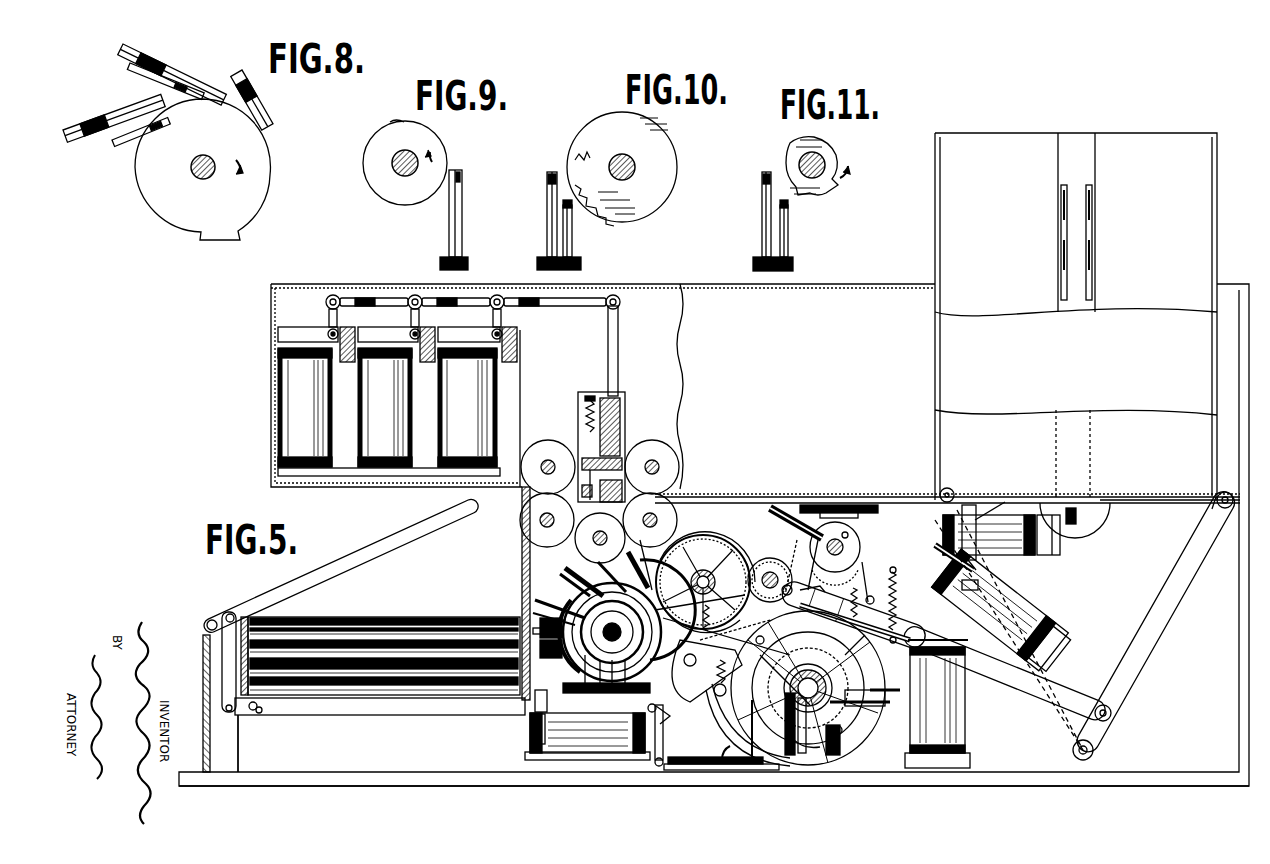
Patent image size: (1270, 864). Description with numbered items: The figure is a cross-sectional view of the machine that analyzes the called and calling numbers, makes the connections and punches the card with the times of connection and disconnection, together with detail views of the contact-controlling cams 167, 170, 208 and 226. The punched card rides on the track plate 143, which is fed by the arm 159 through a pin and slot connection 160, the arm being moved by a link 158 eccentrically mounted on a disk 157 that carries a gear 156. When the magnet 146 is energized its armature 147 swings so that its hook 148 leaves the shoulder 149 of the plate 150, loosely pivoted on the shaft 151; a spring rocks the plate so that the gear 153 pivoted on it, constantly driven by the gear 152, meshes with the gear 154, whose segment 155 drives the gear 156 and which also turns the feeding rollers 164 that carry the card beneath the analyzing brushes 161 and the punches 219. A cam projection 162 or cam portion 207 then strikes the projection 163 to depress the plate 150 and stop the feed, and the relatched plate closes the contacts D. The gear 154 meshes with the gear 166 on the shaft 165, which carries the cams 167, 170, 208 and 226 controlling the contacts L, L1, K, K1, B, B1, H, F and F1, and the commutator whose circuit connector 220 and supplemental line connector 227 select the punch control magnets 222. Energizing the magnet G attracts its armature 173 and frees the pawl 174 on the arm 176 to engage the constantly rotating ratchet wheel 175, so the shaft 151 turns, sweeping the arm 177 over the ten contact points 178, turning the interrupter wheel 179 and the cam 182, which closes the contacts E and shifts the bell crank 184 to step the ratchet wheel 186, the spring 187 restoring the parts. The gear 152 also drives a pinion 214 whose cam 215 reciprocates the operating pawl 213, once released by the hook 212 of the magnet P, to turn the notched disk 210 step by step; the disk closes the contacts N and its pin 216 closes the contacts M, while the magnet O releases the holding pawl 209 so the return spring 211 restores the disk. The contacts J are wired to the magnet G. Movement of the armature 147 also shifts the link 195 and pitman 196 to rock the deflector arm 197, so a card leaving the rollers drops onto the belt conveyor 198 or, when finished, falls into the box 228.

In FIG. 5, the track plate 143 is at (1171, 504).
In FIG. 5, the magnet 146 is at (608, 668).
In FIG. 5, the armature 147 is at (654, 748).
In FIG. 5, the hook 148 is at (608, 754).
In FIG. 5, the shoulder 149 is at (662, 768).
In FIG. 5, the plate 150 is at (685, 768).
In FIG. 5, the shaft 151 is at (838, 735).
In FIG. 5, the gear 152 is at (808, 688).
In FIG. 5, the gear 153 is at (722, 760).
In FIG. 5, the gear 154 is at (722, 546).
In FIG. 5, the segment 155 is at (746, 560).
In FIG. 5, the gear 156 is at (767, 566).
In FIG. 5, the disk 157 is at (797, 540).
In FIG. 5, the link 158 is at (1006, 680).
In FIG. 5, the arm 159 is at (1124, 674).
In FIG. 5, the pin and slot connection 160 is at (1212, 510).
In FIG. 5, the analyzing brush 161 is at (650, 458).
In FIG. 5, the cam projection 162 is at (718, 582).
In FIG. 5, the projection 163 is at (700, 628).
In FIG. 5, the feeding rollers 164 is at (668, 467).
In FIG. 8, the shaft 165 is at (196, 172).
In FIG. 9, the shaft 165 is at (398, 168).
In FIG. 10, the shaft 165 is at (630, 178).
In FIG. 11, the shaft 165 is at (826, 163).
In FIG. 5, the shaft 165 is at (602, 628).
In FIG. 5, the gear 166 is at (716, 596).
In FIG. 8, the cam 167 is at (172, 212).
In FIG. 5, the cam 167 is at (610, 665).
In FIG. 11, the cam 170 is at (832, 148).
In FIG. 5, the cam 170 is at (600, 656).
In FIG. 5, the armature 173 is at (1005, 632).
In FIG. 5, the pawl 174 is at (856, 630).
In FIG. 5, the ratchet wheel 175 is at (897, 634).
In FIG. 5, the arm 176 is at (815, 668).
In FIG. 5, the arm 177 is at (805, 742).
In FIG. 5, the contact points 178 is at (912, 672).
In FIG. 5, the interrupter wheel 179 is at (872, 682).
In FIG. 5, the cam 182 is at (871, 706).
In FIG. 5, the bell crank 184 is at (722, 700).
In FIG. 5, the ratchet wheel 186 is at (718, 572).
In FIG. 5, the spring 187 is at (720, 670).
In FIG. 5, the link 195 is at (390, 710).
In FIG. 5, the pitman 196 is at (230, 666).
In FIG. 5, the deflector arm 197 is at (338, 570).
In FIG. 5, the belt conveyor 198 is at (408, 618).
In FIG. 5, the cam portion 207 is at (655, 586).
In FIG. 9, the cam 208 is at (436, 148).
In FIG. 5, the cam 208 is at (562, 626).
In FIG. 5, the holding pawl 209 is at (860, 593).
In FIG. 5, the notched disk 210 is at (836, 522).
In FIG. 5, the return spring 211 is at (818, 540).
In FIG. 5, the hook 212 is at (934, 504).
In FIG. 5, the operating pawl 213 is at (864, 578).
In FIG. 5, the pinion 214 is at (812, 594).
In FIG. 5, the cam 215 is at (868, 610).
In FIG. 5, the pin 216 is at (845, 530).
In FIG. 5, the punches 219 is at (584, 492).
In FIG. 5, the circuit connector 220 is at (650, 712).
In FIG. 5, the punch control magnet 222 is at (458, 428).
In FIG. 10, the cam 226 is at (584, 150).
In FIG. 5, the cam 226 is at (575, 566).
In FIG. 5, the supplemental line connector 227 is at (612, 690).
In FIG. 5, the box 228 is at (192, 772).
In FIG. 11, the contacts B is at (766, 170).
In FIG. 5, the contacts B is at (560, 668).
In FIG. 11, the contacts B1 is at (788, 220).
In FIG. 5, the contacts B1 is at (533, 740).
In FIG. 5, the contacts D is at (690, 772).
In FIG. 5, the contacts E is at (756, 766).
In FIG. 10, the contacts F is at (549, 170).
In FIG. 5, the contacts F is at (560, 650).
In FIG. 10, the contacts F1 is at (572, 222).
In FIG. 5, the contacts F1 is at (536, 715).
In FIG. 5, the magnet G is at (962, 732).
In FIG. 9, the contacts H is at (462, 190).
In FIG. 5, the contacts H is at (675, 672).
In FIG. 8, the contacts J is at (268, 110).
In FIG. 5, the contacts J is at (660, 600).
In FIG. 8, the contacts K is at (132, 104).
In FIG. 5, the contacts K is at (570, 592).
In FIG. 8, the arm K1 is at (128, 132).
In FIG. 5, the arm K1 is at (566, 604).
In FIG. 8, the contacts L is at (206, 86).
In FIG. 5, the contacts L is at (630, 580).
In FIG. 8, the contacts L1 is at (176, 76).
In FIG. 5, the contacts L1 is at (605, 566).
In FIG. 5, the contacts M is at (828, 522).
In FIG. 5, the contacts N is at (850, 508).
In FIG. 5, the magnet O is at (1015, 612).
In FIG. 5, the magnet P is at (1002, 512).